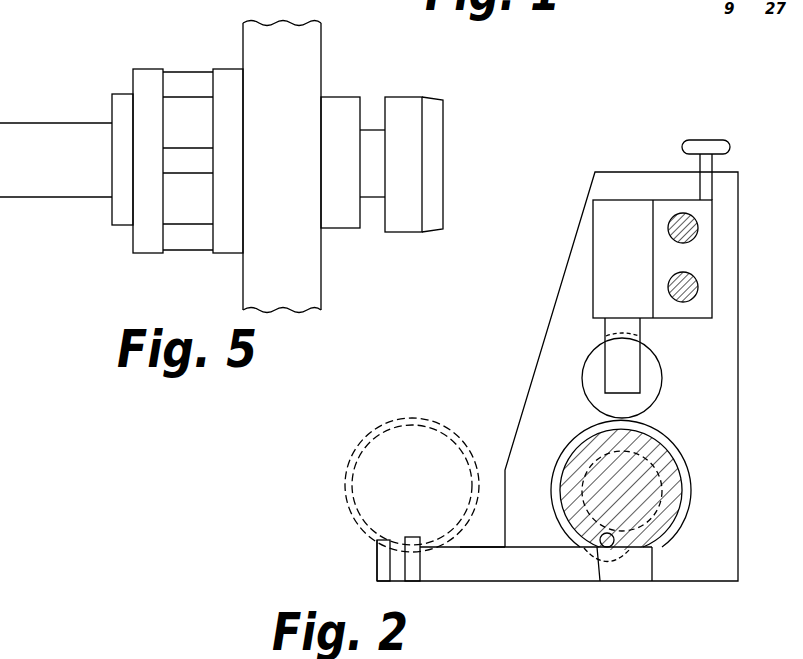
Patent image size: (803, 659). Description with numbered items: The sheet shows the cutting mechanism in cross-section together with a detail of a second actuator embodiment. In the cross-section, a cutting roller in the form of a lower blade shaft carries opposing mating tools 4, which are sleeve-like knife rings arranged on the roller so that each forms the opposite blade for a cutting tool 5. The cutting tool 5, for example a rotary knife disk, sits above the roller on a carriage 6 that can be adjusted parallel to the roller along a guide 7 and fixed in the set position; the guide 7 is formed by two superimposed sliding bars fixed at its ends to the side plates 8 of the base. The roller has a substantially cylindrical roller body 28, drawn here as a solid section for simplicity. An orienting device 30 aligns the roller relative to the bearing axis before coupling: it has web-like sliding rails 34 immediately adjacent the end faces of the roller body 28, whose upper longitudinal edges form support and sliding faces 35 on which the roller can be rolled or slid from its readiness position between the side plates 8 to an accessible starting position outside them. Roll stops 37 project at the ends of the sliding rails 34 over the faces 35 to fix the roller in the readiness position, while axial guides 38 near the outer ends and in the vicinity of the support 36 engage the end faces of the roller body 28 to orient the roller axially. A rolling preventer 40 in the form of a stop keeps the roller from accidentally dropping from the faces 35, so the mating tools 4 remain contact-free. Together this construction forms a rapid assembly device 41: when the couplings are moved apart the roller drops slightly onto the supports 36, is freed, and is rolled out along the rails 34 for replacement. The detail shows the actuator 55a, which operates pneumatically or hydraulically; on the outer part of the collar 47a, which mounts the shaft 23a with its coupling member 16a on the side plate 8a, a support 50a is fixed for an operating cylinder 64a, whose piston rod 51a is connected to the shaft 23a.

In FIG. 2, the mating tool 4 is at (655, 433).
In FIG. 2, the cutting tool 5 is at (655, 382).
In FIG. 2, the carriage 6 is at (705, 260).
In FIG. 2, the guide 7 is at (670, 275).
In FIG. 2, the side plate 8 is at (565, 322).
In FIG. 2, the roller body 28 is at (672, 462).
In FIG. 2, the orienting device 30 is at (528, 501).
In FIG. 2, the sliding rail 34 is at (467, 565).
In FIG. 2, the support and sliding face 35 is at (488, 545).
In FIG. 2, the support 36 is at (598, 557).
In FIG. 2, the roll stop 37 is at (653, 543).
In FIG. 2, the axial guide 38 is at (413, 537).
In FIG. 2, the rolling preventer 40 is at (380, 538).
In FIG. 2, the rapid assembly device 41 is at (476, 387).
In FIG. 5, the side plate 8a is at (313, 47).
In FIG. 5, the coupling member 16a is at (438, 128).
In FIG. 5, the shaft 23a is at (367, 180).
In FIG. 5, the collar 47a is at (238, 142).
In FIG. 5, the support 50a is at (150, 73).
In FIG. 5, the piston rod 51a is at (178, 152).
In FIG. 5, the actuator 55a is at (127, 272).
In FIG. 5, the operating cylinder 64a is at (33, 125).